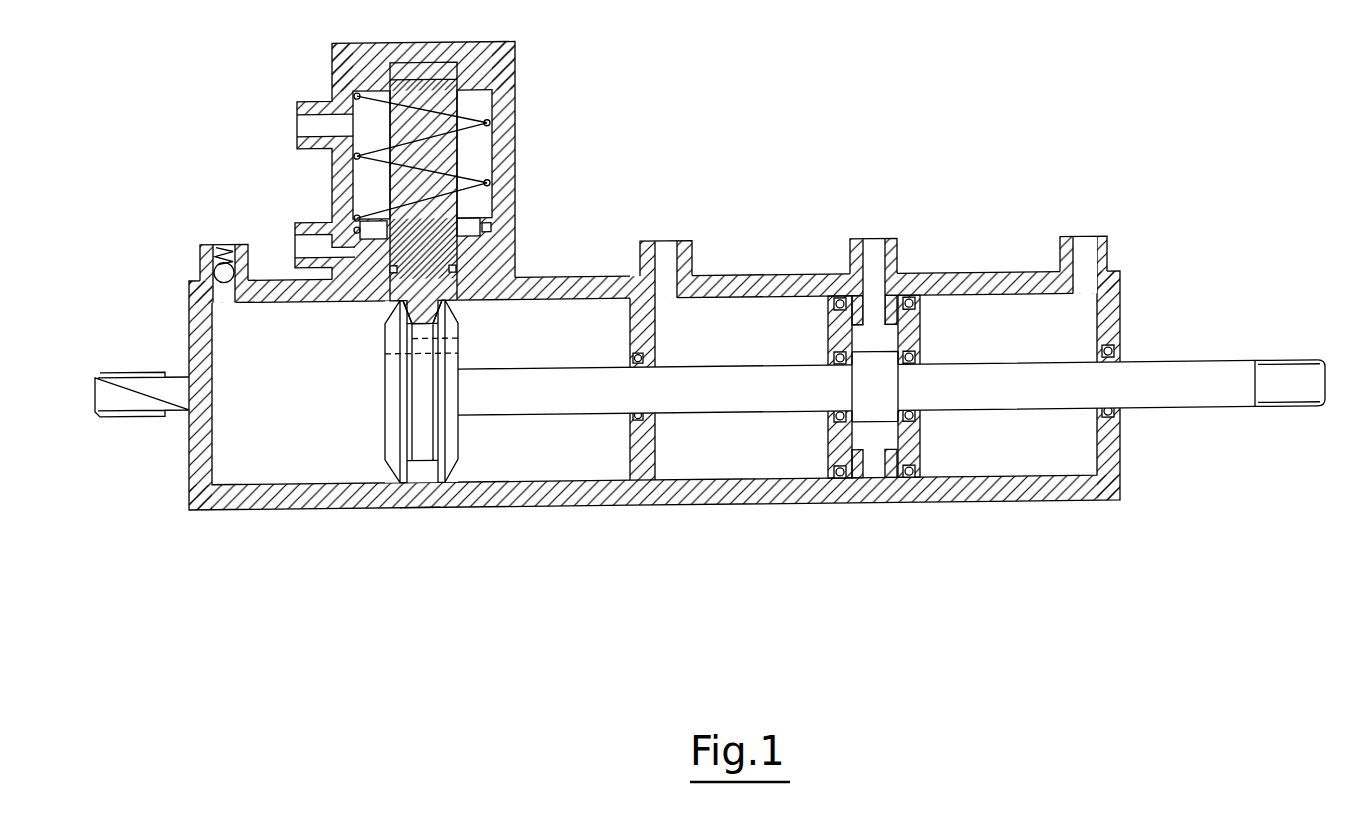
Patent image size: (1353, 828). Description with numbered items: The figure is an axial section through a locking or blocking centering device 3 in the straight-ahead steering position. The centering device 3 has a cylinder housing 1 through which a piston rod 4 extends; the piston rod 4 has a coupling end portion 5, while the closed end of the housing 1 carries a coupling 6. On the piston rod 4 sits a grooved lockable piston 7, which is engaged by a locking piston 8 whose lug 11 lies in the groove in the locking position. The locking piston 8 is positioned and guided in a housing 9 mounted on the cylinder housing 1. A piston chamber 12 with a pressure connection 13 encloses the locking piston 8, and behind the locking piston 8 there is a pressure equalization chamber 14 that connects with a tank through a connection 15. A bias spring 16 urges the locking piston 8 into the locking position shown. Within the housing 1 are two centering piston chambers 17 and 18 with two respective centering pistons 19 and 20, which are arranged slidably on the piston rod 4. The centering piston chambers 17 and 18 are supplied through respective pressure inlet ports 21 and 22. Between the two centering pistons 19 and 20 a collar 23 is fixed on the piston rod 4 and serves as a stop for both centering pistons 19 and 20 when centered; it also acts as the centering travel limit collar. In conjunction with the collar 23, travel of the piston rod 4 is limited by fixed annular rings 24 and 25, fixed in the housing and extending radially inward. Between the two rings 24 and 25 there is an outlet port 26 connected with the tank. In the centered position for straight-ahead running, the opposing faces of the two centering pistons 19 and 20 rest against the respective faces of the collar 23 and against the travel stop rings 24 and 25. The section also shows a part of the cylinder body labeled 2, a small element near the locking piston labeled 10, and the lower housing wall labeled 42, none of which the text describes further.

The housing 1 is at (765, 267).
The housing 2 is at (570, 269).
The centering device 3 is at (978, 272).
The piston rod 4 is at (733, 403).
The coupling end portion 5 is at (1278, 385).
The coupling 6 is at (127, 397).
The lockable piston 7 is at (450, 448).
The locking piston 8 is at (448, 151).
The housing 9 is at (513, 198).
The spring seat 10 is at (350, 217).
The lug 11 is at (408, 324).
The piston chamber 12 is at (477, 238).
The pressure connection 13 is at (307, 248).
The pressure equalization chamber 14 is at (367, 114).
The connection 15 is at (300, 131).
The bias spring 16 is at (503, 96).
The centering piston chamber 17 is at (737, 346).
The centering piston chamber 18 is at (997, 347).
The centering piston 19 is at (822, 444).
The centering piston 20 is at (923, 445).
The pressure inlet port 21 is at (672, 243).
The pressure inlet port 22 is at (1087, 258).
The collar 23 is at (883, 389).
The annular ring 24 is at (860, 465).
The annular ring 25 is at (897, 463).
The outlet port 26 is at (875, 255).
The housing bottom 42 is at (417, 502).